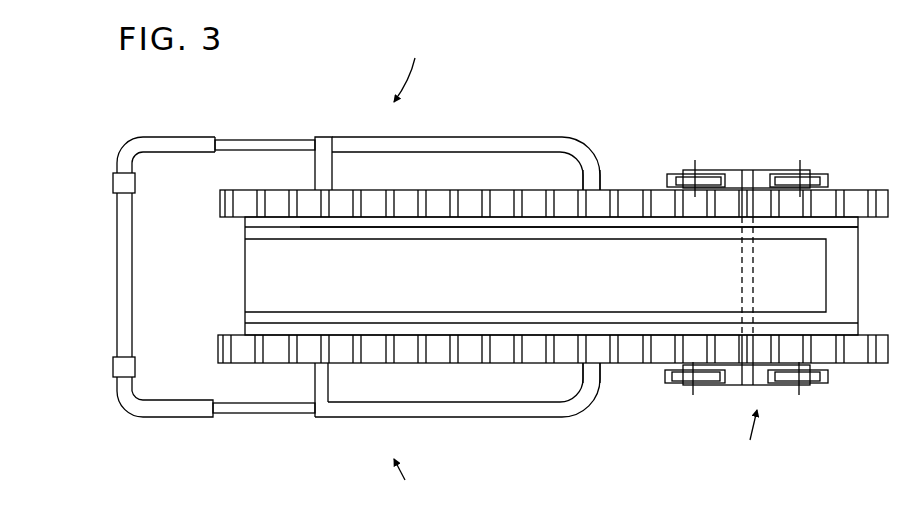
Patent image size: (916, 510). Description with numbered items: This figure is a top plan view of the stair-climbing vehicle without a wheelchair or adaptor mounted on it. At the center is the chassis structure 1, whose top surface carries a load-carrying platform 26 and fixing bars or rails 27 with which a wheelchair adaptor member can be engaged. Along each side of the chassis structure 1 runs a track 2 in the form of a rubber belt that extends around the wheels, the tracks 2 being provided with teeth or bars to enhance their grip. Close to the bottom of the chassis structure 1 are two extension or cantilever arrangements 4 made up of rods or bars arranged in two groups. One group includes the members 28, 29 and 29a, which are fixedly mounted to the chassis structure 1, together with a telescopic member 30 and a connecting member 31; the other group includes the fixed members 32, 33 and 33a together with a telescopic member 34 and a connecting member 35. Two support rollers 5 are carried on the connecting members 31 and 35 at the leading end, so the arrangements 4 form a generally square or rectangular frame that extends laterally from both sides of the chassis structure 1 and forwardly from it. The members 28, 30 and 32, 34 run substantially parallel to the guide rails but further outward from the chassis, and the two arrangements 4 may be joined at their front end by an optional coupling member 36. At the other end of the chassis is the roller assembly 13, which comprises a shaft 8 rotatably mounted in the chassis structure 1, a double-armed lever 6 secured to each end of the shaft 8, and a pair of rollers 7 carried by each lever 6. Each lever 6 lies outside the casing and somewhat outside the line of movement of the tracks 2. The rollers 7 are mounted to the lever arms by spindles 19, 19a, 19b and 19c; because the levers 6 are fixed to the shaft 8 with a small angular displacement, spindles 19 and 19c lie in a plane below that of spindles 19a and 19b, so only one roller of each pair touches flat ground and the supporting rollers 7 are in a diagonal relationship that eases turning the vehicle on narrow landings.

The chassis structure 1 is at (266, 265).
The track 2 is at (240, 343).
The extension or cantilever arrangement 4 is at (406, 267).
The support roller 5 is at (122, 182).
The double-armed lever 6 is at (765, 170).
The roller 7 is at (682, 179).
The shaft 8 is at (754, 283).
The roller assembly 13 is at (747, 439).
The spindle 19 is at (799, 395).
The spindle 19a is at (693, 395).
The spindle 19b is at (802, 160).
The spindle 19c is at (697, 160).
The load-carrying platform 26 is at (485, 291).
The fixing bars or rails 27 is at (341, 318).
The frame member 28 is at (448, 150).
The frame member 29 is at (322, 160).
The frame member 29a is at (591, 170).
The telescopic member 30 is at (268, 139).
The connecting member 31 is at (172, 136).
The frame member 32 is at (425, 408).
The frame member 33 is at (327, 383).
The frame member 33a is at (592, 380).
The telescopic member 34 is at (265, 412).
The connecting member 35 is at (165, 408).
The coupling member 36 is at (122, 226).